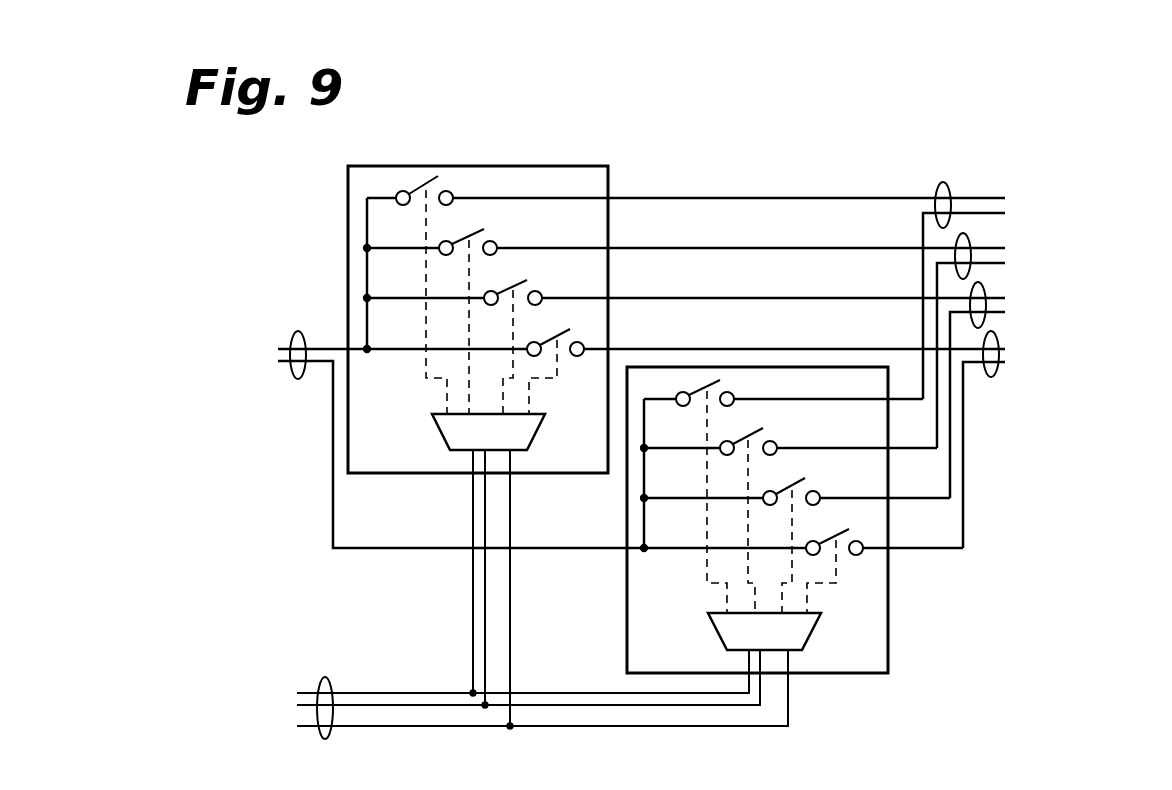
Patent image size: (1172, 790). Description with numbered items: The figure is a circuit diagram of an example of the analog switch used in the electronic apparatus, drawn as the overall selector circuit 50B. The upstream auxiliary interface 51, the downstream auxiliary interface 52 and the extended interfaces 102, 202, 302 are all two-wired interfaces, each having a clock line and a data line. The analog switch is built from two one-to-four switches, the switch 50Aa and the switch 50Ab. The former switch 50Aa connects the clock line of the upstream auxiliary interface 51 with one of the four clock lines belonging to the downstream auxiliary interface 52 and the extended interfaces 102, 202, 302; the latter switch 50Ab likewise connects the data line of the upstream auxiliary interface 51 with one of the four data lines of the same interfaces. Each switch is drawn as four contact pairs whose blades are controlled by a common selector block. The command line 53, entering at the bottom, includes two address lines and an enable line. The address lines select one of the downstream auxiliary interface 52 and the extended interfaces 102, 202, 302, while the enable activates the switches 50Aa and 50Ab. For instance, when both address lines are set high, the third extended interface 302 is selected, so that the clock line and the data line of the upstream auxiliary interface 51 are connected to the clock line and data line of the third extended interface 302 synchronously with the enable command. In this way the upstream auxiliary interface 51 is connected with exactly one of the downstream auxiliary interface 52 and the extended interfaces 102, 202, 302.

The upstream auxiliary interface 51 is at (432, 420).
The command line 53 is at (299, 696).
The third extended interface 302 is at (991, 290).
The extended interface 202 is at (998, 340).
The extended interface 102 is at (1004, 390).
The downstream auxiliary interface 52 is at (1004, 439).
The 1:4 switch 50Aa is at (435, 477).
The 1:4 switch 50Ab is at (623, 632).
The selector circuit 50B is at (673, 457).